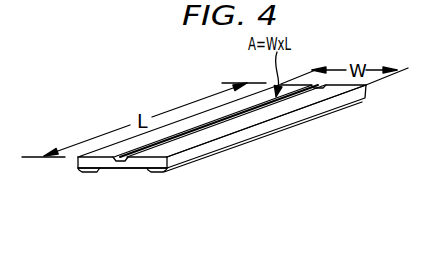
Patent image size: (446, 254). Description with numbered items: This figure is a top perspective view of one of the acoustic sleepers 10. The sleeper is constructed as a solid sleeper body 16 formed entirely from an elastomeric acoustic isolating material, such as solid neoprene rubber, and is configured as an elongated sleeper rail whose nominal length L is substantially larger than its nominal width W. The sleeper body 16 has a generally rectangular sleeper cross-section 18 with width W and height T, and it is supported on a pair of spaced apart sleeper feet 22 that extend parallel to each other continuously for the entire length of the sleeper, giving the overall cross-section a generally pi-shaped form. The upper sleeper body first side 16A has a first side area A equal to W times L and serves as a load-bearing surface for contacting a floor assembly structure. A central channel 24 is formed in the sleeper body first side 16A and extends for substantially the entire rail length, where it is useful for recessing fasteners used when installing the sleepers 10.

The acoustic sleeper 10 is at (119, 86).
The sleeper body 16 is at (292, 113).
The sleeper body first side 16A is at (236, 124).
The sleeper cross-section 18 is at (200, 171).
The sleeper feet 22 is at (88, 172).
The central channel 24 is at (121, 157).